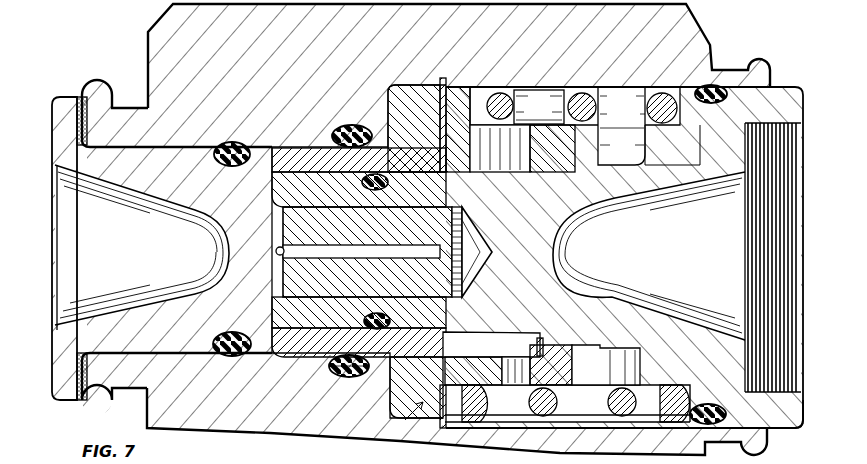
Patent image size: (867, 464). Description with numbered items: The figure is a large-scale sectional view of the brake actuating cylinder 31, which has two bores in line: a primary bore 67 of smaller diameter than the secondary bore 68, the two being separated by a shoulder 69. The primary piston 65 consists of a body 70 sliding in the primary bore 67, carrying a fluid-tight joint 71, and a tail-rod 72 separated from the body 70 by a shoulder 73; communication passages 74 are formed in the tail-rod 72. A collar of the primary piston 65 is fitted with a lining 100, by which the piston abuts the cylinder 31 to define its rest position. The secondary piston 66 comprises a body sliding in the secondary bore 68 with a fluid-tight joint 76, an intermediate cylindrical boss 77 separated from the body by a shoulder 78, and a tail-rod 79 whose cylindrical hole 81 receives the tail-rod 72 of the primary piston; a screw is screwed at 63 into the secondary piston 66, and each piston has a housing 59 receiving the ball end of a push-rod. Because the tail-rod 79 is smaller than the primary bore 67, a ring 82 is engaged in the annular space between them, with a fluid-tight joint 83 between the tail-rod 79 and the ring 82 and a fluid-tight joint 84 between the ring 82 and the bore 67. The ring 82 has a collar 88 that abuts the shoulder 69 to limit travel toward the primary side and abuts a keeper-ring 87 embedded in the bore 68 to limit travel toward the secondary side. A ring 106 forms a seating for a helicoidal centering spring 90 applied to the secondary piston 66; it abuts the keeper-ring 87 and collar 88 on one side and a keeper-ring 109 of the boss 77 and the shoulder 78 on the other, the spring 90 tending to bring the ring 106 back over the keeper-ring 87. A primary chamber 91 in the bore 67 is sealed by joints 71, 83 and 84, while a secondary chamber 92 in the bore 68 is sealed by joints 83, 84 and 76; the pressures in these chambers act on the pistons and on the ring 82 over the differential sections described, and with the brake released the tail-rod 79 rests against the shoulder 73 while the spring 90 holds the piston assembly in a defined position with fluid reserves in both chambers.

The cylinder 31 is at (158, 24).
The lining 100 is at (84, 103).
The primary piston 65 is at (56, 360).
The body 70 is at (128, 340).
The primary bore 67 is at (147, 151).
The housing 59 is at (400, 252).
The communication passages 74 is at (283, 279).
The fluid-tight joint 71 is at (231, 357).
The primary chamber 91 is at (283, 148).
The tail-rod 79 is at (321, 183).
The ring 82 is at (336, 147).
The collar 88 is at (423, 127).
The keeper-ring 87 is at (442, 78).
The secondary chamber 92 is at (520, 87).
The ring 106 is at (525, 107).
The helicoidal centering spring 90 is at (622, 126).
The secondary bore 68 is at (652, 128).
The screw thread 63 is at (733, 174).
The secondary piston 66 is at (776, 411).
The cylindrical hole 81 is at (445, 212).
The shoulder 73 is at (282, 318).
The tail-rod 72 is at (421, 292).
The keeper-ring 109 is at (533, 341).
The fluid-tight joint 83 is at (377, 330).
The fluid-tight joint 84 is at (344, 380).
The shoulder 69 is at (387, 400).
The shoulder 78 is at (637, 346).
The intermediate cylindrical boss 77 is at (590, 346).
The fluid-tight joint 76 is at (710, 405).